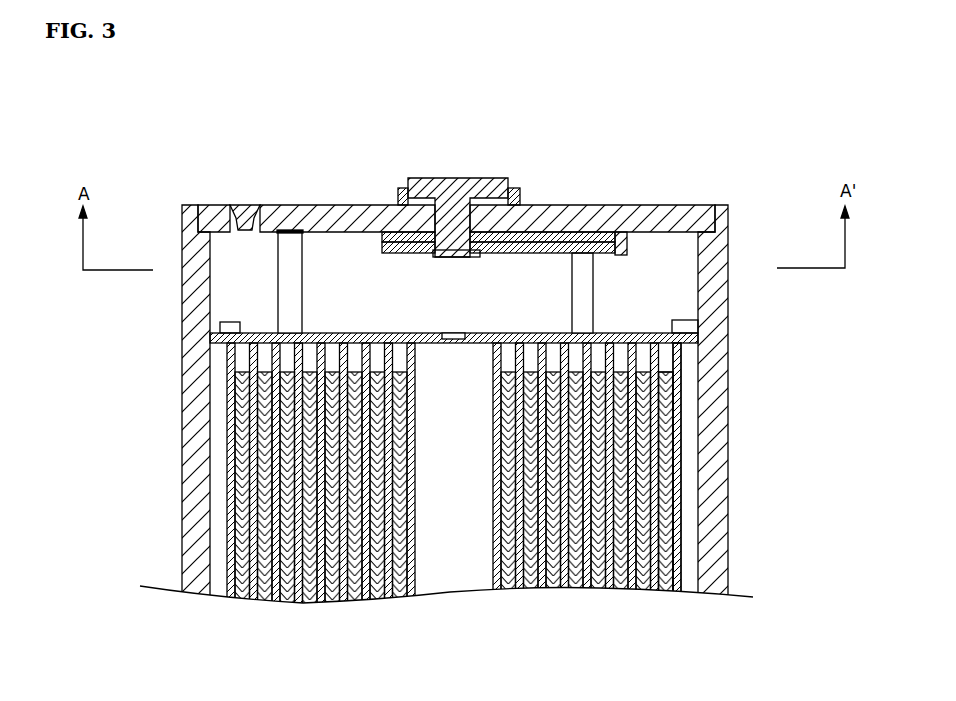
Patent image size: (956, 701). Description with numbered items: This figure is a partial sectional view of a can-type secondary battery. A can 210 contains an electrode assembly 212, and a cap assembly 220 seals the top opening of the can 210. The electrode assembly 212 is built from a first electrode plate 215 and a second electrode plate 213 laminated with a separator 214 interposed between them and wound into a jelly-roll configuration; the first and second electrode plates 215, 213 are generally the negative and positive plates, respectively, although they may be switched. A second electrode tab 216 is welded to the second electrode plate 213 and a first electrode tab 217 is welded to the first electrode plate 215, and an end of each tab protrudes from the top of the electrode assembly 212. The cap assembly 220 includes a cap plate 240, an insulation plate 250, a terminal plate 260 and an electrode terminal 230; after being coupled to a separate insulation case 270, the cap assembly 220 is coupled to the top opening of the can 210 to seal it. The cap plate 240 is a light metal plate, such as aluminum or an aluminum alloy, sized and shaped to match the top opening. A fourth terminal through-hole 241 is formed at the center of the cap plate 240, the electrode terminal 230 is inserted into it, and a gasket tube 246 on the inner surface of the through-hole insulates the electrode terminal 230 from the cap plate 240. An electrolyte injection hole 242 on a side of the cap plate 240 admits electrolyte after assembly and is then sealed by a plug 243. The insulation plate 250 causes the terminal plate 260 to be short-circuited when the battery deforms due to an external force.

The can 210 is at (715, 488).
The electrode assembly 212 is at (526, 507).
The second electrode plate 213 is at (660, 587).
The separator 214 is at (673, 587).
The first electrode plate 215 is at (640, 588).
The second electrode tab 216 is at (287, 262).
The first electrode tab 217 is at (583, 298).
The cap assembly 220 is at (433, 173).
The electrode terminal 230 is at (457, 180).
The cap plate 240 is at (645, 205).
The fourth terminal through-hole 241 is at (400, 190).
The electrolyte injection hole 242 is at (223, 210).
The plug 243 is at (242, 203).
The gasket tube 246 is at (536, 167).
The insulation plate 250 is at (622, 258).
The terminal plate 260 is at (523, 253).
The insulation case 270 is at (263, 333).